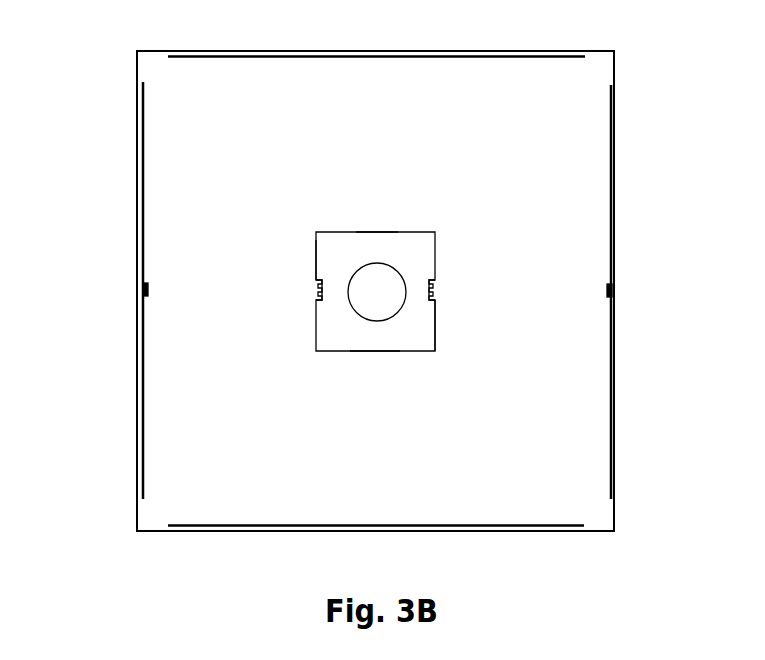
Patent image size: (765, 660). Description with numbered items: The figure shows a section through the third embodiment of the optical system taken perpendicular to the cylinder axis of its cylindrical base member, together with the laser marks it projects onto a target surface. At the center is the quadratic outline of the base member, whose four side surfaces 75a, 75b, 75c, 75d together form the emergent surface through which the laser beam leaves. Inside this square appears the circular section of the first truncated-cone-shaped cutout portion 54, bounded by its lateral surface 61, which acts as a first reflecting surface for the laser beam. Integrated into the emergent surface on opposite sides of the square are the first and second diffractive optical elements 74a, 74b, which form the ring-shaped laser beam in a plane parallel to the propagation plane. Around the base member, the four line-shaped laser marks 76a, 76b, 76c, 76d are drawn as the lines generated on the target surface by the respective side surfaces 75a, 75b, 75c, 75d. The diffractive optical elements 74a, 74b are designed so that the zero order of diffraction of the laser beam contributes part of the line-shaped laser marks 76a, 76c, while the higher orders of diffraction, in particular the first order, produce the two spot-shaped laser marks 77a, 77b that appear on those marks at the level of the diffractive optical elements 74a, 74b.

The first truncated-cone-shaped cutout portion 54 is at (389, 302).
The lateral surface 61 is at (393, 268).
The first diffractive optical element 74a is at (435, 296).
The second diffractive optical element 74b is at (316, 297).
The side surface 75a is at (435, 334).
The side surface 75b is at (372, 351).
The side surface 75c is at (316, 262).
The side surface 75d is at (377, 232).
The line-shaped laser mark 76a is at (611, 141).
The line-shaped laser mark 76b is at (455, 525).
The line-shaped laser mark 76c is at (143, 432).
The line-shaped laser mark 76d is at (258, 57).
The spot-shaped laser mark 77a is at (612, 292).
The spot-shaped laser mark 77b is at (146, 290).